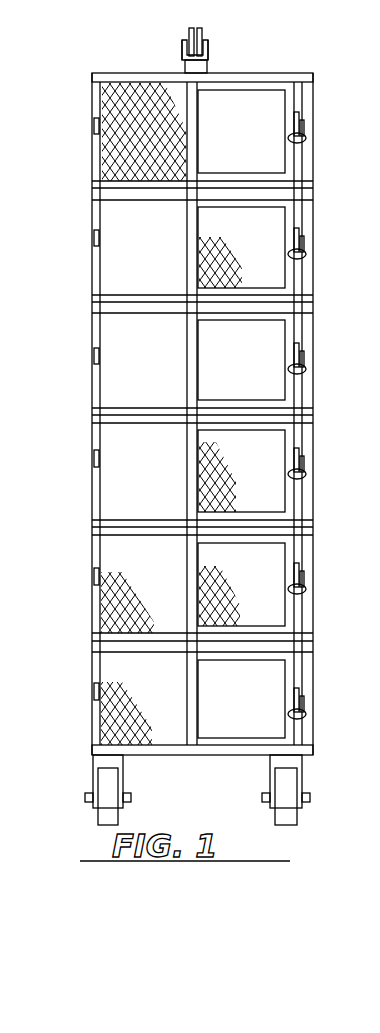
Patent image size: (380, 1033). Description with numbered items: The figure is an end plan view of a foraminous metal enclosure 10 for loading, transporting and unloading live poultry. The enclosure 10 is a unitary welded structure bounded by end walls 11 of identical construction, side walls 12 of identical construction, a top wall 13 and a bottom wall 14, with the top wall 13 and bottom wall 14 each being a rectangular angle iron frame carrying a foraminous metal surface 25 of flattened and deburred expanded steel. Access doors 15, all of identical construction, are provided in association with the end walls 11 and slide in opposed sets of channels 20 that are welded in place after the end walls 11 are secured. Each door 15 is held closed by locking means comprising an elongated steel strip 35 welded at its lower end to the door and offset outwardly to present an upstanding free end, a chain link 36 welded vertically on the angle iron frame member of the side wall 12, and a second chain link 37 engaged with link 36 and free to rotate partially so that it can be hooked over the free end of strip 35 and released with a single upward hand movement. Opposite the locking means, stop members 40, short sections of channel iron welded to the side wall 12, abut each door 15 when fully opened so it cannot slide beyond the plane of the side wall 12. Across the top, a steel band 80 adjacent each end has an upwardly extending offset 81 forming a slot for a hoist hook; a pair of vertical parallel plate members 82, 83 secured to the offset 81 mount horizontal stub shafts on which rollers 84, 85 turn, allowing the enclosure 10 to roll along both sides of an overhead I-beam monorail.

The metal enclosure 10 is at (157, 367).
The end wall 11 is at (108, 160).
The side wall 12 is at (92, 270).
The top wall 13 is at (200, 78).
The bottom wall 14 is at (191, 757).
The access door 15 is at (252, 149).
The channel 20 is at (313, 82).
The foraminous metal surface 25 is at (92, 149).
The elongated steel strip 35 is at (298, 115).
The chain link 36 is at (304, 124).
The chain link 37 is at (303, 139).
The stop member 40 is at (94, 126).
The steel band 80 is at (283, 73).
The upwardly extending offset 81 is at (184, 64).
The plate member 82 is at (183, 46).
The plate member 83 is at (208, 48).
The roller 84 is at (190, 32).
The roller 85 is at (200, 30).